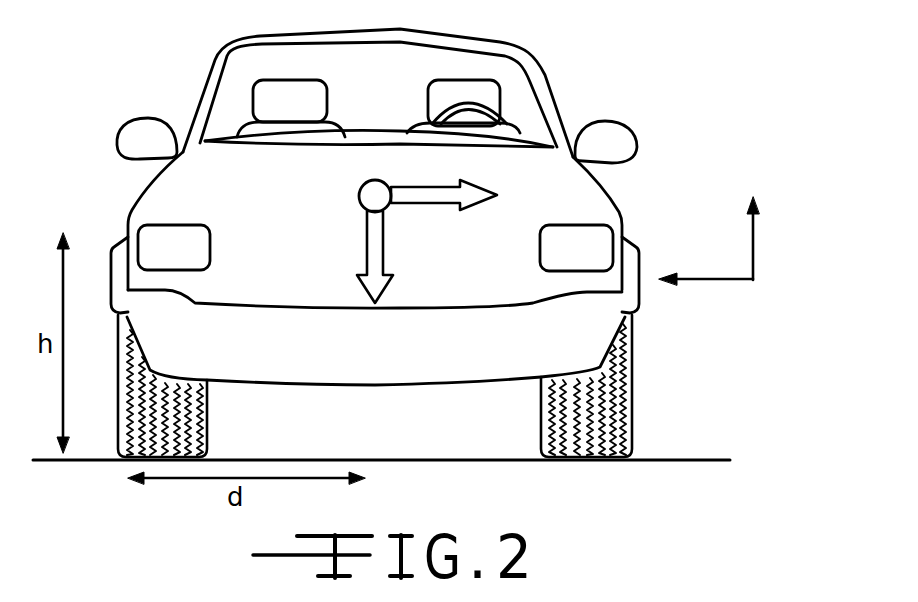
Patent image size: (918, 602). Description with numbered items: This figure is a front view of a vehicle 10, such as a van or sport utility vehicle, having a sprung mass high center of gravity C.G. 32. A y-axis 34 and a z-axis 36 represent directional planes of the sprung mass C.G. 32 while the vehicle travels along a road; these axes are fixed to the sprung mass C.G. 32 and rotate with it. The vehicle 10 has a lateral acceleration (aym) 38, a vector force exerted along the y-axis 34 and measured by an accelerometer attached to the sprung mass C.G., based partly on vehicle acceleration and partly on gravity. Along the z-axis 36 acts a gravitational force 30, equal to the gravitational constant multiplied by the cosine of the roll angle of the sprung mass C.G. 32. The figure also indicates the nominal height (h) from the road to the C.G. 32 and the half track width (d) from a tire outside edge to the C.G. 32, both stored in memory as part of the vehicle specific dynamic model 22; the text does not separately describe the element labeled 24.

The vehicle 10 is at (547, 77).
The vehicle specific dynamic model 22 is at (633, 362).
The left wheel 24 is at (208, 400).
The gravitational force 30 is at (362, 286).
The center of gravity C.G. 32 is at (358, 197).
The y-axis 34 is at (703, 282).
The z-axis 36 is at (757, 241).
The lateral acceleration (aym) 38 is at (477, 184).